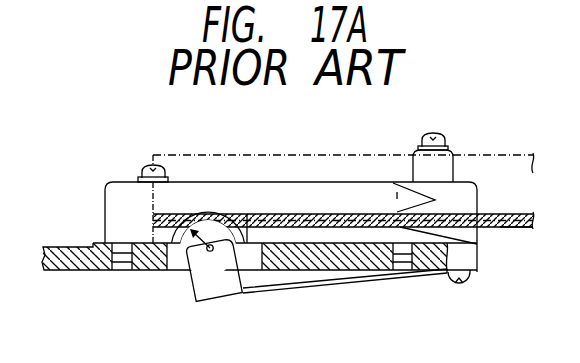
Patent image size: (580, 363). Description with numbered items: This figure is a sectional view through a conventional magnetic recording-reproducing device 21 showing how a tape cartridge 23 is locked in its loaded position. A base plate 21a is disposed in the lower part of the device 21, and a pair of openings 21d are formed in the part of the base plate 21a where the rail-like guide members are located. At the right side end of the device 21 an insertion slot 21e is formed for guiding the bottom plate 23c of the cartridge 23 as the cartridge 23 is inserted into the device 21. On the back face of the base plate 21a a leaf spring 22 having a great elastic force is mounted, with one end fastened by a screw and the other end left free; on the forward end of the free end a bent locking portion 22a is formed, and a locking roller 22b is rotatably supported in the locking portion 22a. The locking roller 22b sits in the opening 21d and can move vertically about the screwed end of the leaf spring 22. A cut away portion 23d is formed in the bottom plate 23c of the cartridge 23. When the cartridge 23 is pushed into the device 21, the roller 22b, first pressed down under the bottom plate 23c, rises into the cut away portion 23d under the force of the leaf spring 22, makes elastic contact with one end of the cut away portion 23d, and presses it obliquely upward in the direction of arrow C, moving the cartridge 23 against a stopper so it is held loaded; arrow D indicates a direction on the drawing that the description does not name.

The magnetic recording-reproducing device 21 is at (97, 203).
The base plate 21a is at (62, 272).
The opening 21d is at (252, 283).
The insertion slot 21e is at (441, 213).
The leaf spring 22 is at (301, 291).
The locking portion 22a is at (212, 283).
The locking roller 22b is at (182, 272).
The cartridge 23 is at (339, 166).
The bottom plate 23c is at (501, 228).
The cut away portion 23d is at (238, 237).
The arrow C is at (207, 226).
The direction arrow D is at (158, 137).